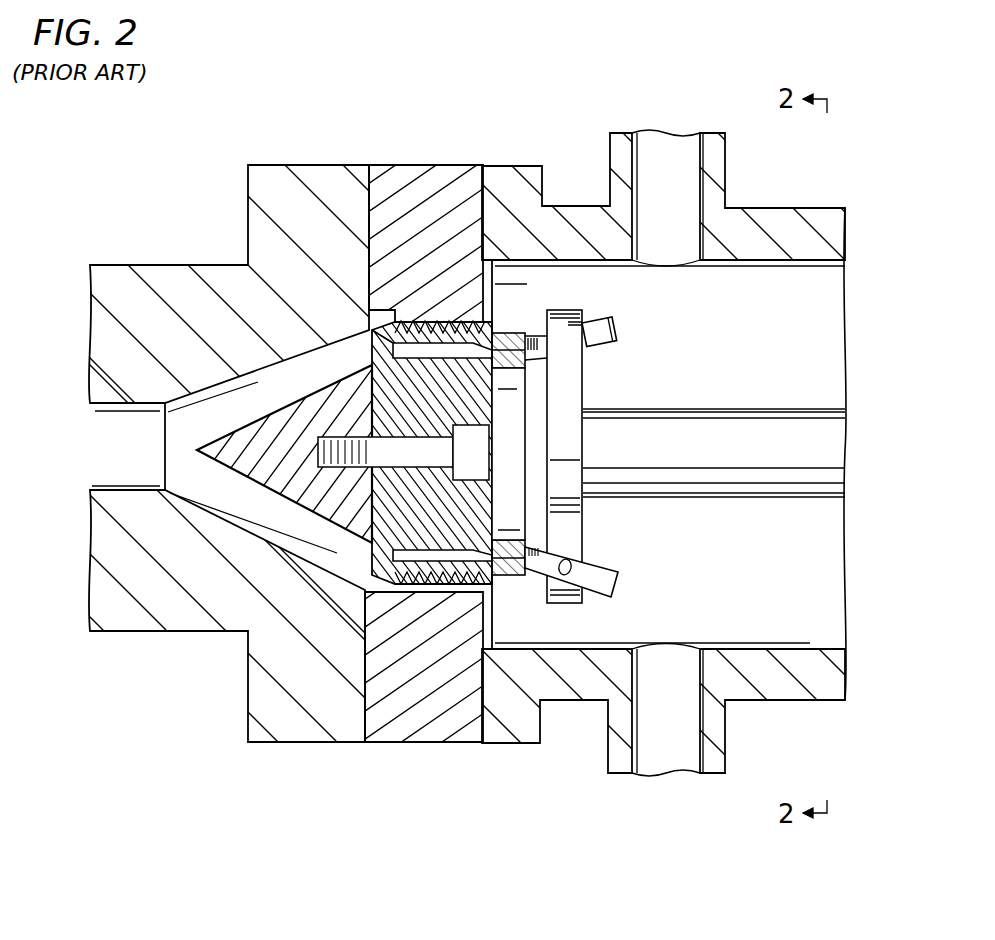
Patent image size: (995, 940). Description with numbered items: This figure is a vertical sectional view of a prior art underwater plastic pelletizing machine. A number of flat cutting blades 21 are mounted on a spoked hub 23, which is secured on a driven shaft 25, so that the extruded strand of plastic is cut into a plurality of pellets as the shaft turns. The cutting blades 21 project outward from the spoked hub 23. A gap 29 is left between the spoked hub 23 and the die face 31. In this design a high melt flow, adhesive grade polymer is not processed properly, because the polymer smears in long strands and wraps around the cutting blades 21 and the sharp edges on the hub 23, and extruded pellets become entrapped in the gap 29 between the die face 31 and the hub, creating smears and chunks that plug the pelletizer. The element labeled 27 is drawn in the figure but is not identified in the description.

The flat cutting blades 21 is at (600, 328).
The spoked hub 23 is at (568, 539).
The driven shaft 25 is at (805, 427).
The fastener 27 is at (620, 337).
The gap 29 is at (528, 490).
The die face 31 is at (520, 397).